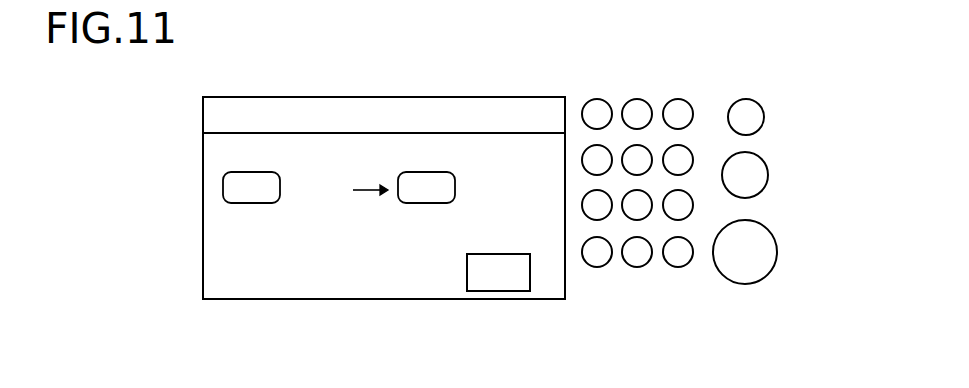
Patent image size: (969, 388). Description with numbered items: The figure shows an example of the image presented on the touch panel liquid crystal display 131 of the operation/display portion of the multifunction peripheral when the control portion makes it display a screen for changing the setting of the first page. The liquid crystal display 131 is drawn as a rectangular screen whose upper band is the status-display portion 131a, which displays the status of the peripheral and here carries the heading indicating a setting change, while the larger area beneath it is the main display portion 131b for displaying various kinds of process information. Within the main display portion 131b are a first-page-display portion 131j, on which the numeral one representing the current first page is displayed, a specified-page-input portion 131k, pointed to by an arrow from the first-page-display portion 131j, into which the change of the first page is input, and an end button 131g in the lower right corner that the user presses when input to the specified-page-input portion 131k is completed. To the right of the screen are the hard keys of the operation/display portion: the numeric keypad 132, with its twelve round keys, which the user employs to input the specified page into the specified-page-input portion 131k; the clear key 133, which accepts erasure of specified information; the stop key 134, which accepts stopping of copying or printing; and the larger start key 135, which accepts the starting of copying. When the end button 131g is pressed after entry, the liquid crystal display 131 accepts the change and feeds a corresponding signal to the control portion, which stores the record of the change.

The liquid crystal display 131 is at (327, 299).
The status-display portion 131a is at (203, 118).
The main display portion 131b is at (203, 197).
The first-page-display portion 131j is at (248, 203).
The specified-page-input portion 131k is at (422, 203).
The end button 131g is at (495, 291).
The numeric keypad 132 is at (637, 267).
The clear key 133 is at (764, 117).
The stop key 134 is at (768, 175).
The start key 135 is at (777, 248).